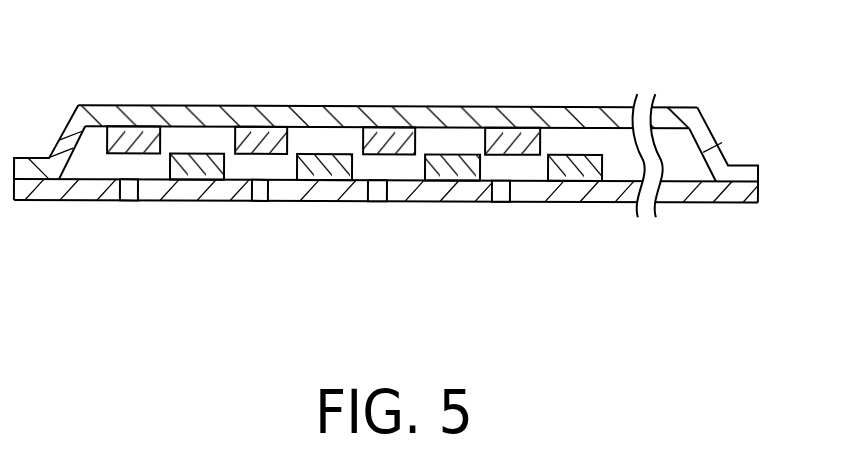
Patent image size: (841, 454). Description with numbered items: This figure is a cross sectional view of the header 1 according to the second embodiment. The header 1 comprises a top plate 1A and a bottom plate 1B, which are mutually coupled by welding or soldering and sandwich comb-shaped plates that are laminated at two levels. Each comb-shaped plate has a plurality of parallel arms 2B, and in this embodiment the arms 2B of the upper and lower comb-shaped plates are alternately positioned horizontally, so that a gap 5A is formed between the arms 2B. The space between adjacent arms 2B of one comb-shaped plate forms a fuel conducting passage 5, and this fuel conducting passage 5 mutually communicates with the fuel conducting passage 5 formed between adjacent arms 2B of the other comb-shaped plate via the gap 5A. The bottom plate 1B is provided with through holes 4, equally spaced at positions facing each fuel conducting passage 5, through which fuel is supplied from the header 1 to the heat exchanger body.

The header 1 is at (386, 147).
The top plate 1A is at (100, 108).
The bottom plate 1B is at (67, 200).
The arm 2B is at (387, 140).
The through hole 4 is at (259, 190).
The fuel conducting passage 5 is at (450, 138).
The gap 5A is at (174, 138).